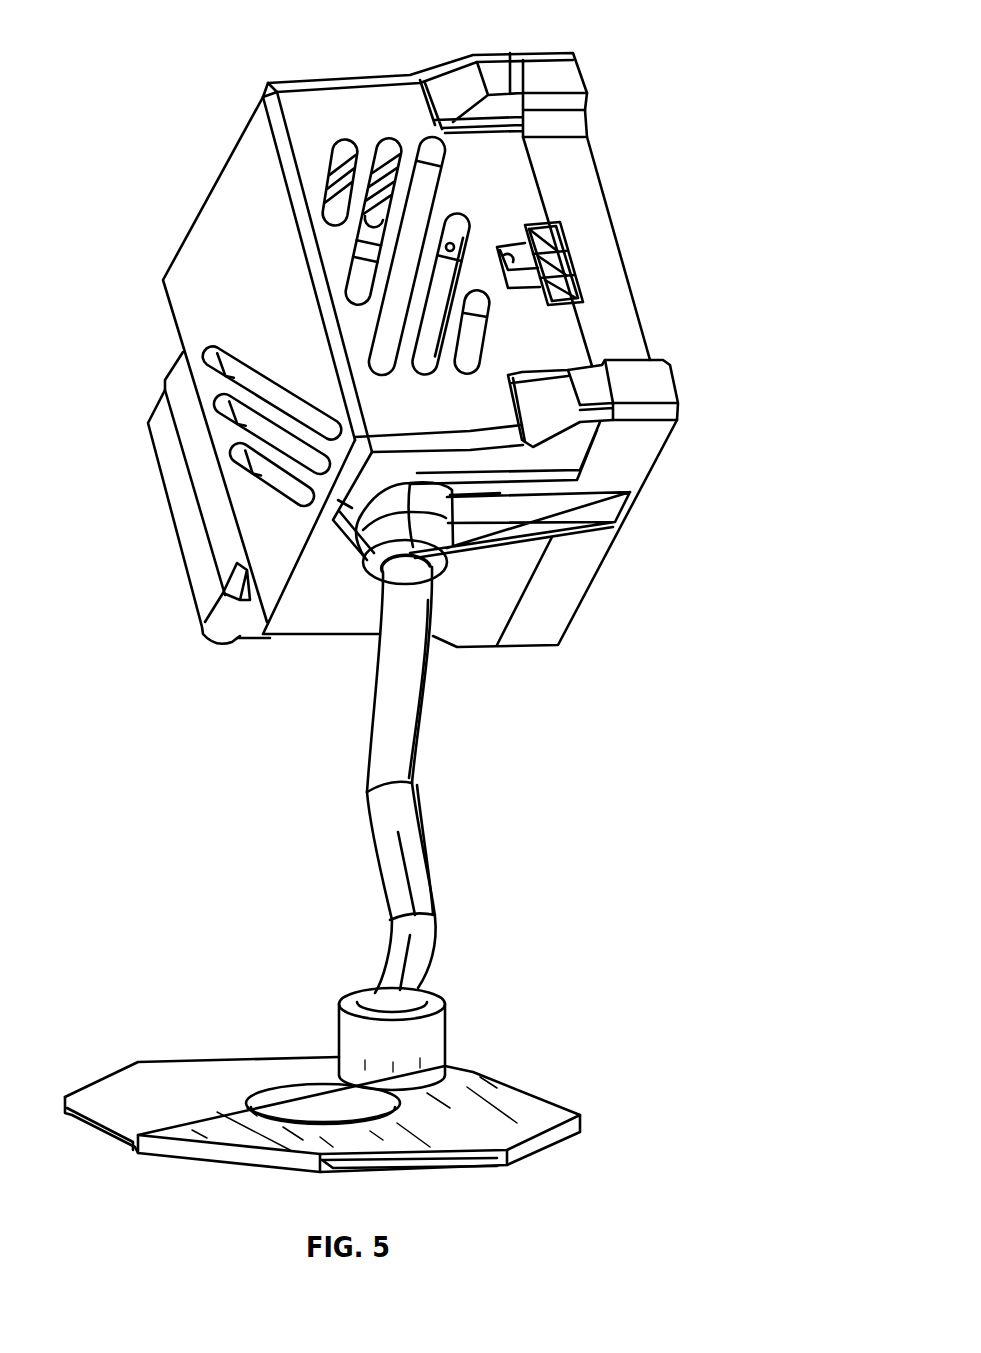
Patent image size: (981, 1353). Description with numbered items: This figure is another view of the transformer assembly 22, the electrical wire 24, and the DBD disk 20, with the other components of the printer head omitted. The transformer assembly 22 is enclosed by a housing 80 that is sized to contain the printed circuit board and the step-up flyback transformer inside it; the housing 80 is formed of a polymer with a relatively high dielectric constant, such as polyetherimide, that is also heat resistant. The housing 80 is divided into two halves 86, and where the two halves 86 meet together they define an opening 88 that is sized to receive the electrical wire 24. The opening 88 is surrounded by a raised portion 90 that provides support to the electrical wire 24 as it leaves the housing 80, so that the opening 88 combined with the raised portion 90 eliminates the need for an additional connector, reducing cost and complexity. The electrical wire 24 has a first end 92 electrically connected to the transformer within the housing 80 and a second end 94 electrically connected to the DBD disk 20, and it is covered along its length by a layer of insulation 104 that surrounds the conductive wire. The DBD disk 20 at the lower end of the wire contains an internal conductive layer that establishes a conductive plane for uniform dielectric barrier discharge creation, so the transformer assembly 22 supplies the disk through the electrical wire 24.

The transformer assembly 22 is at (583, 50).
The housing 80 is at (598, 211).
The halves 86 is at (625, 348).
The opening 88 is at (383, 578).
The raised portion 90 is at (428, 553).
The first end 92 is at (371, 597).
The layer of insulation 104 is at (428, 702).
The electrical wire 24 is at (427, 836).
The second end 94 is at (446, 988).
The DBD disk 20 is at (551, 1079).